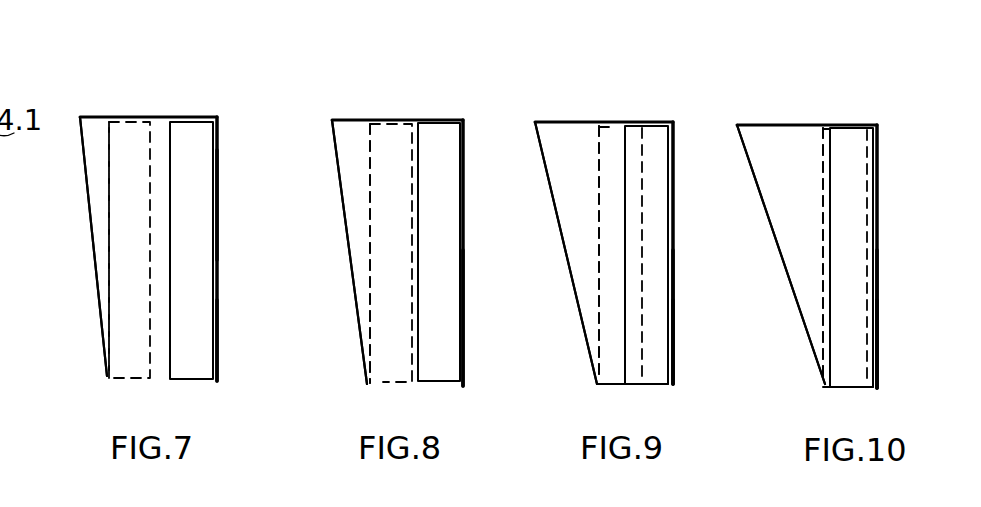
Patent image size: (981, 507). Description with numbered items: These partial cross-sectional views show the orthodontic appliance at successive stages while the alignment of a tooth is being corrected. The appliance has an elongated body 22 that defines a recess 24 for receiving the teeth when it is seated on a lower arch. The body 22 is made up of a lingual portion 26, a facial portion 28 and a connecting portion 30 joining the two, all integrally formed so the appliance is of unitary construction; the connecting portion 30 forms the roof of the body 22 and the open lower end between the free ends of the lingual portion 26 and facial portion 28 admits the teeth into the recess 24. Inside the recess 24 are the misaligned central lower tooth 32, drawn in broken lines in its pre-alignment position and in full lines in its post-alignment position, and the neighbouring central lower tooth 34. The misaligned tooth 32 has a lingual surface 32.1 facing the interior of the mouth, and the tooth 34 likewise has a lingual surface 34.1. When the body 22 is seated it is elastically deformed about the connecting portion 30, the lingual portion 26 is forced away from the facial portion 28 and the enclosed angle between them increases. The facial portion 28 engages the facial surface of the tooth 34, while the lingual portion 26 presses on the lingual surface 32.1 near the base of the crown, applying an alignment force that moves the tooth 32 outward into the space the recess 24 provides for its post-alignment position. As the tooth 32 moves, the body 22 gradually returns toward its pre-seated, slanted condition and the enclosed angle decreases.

In FIG. 7, the elongated body 22 is at (182, 117).
In FIG. 8, the elongated body 22 is at (443, 119).
In FIG. 9, the elongated body 22 is at (643, 121).
In FIG. 10, the elongated body 22 is at (835, 124).
In FIG. 7, the recess 24 is at (96, 303).
In FIG. 8, the recess 24 is at (343, 231).
In FIG. 9, the recess 24 is at (577, 325).
In FIG. 10, the recess 24 is at (800, 325).
In FIG. 7, the lingual portion 26 is at (88, 211).
In FIG. 8, the lingual portion 26 is at (337, 173).
In FIG. 9, the lingual portion 26 is at (553, 201).
In FIG. 10, the lingual portion 26 is at (762, 204).
In FIG. 7, the facial portion 28 is at (218, 344).
In FIG. 8, the facial portion 28 is at (465, 298).
In FIG. 9, the facial portion 28 is at (674, 311).
In FIG. 10, the facial portion 28 is at (878, 296).
In FIG. 7, the connecting portion 30 is at (122, 117).
In FIG. 8, the connecting portion 30 is at (378, 119).
In FIG. 9, the connecting portion 30 is at (596, 121).
In FIG. 10, the connecting portion 30 is at (778, 124).
In FIG. 7, the central lower tooth 32 is at (123, 170).
In FIG. 8, the central lower tooth 32 is at (382, 298).
In FIG. 9, the central lower tooth 32 is at (612, 167).
In FIG. 10, the central lower tooth 32 is at (830, 163).
In FIG. 7, the lingual surface 32.1 is at (106, 243).
In FIG. 8, the lingual surface 32.1 is at (365, 260).
In FIG. 9, the lingual surface 32.1 is at (596, 255).
In FIG. 10, the lingual surface 32.1 is at (819, 283).
In FIG. 7, the central lower tooth 34 is at (200, 157).
In FIG. 8, the central lower tooth 34 is at (440, 172).
In FIG. 9, the central lower tooth 34 is at (658, 171).
In FIG. 10, the central lower tooth 34 is at (858, 204).
In FIG. 7, the lingual surface 34.1 is at (218, 182).
In FIG. 9, the lingual surface 34.1 is at (743, 348).
In FIG. 10, the lingual surface 34.1 is at (879, 345).